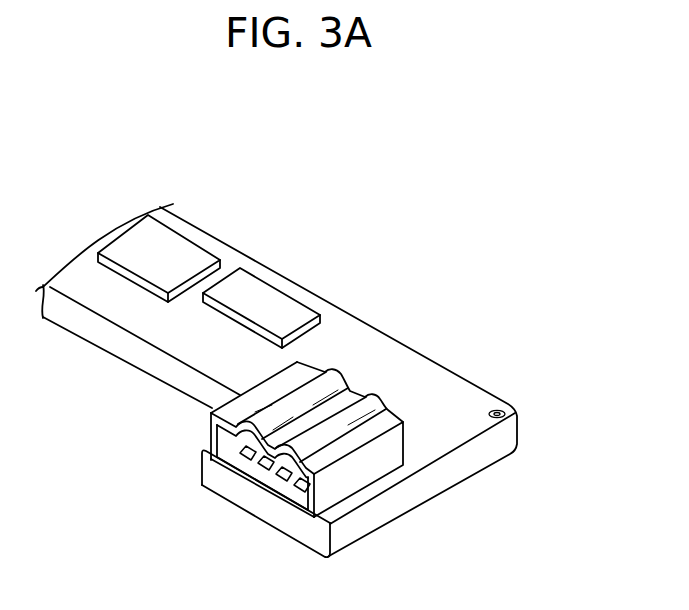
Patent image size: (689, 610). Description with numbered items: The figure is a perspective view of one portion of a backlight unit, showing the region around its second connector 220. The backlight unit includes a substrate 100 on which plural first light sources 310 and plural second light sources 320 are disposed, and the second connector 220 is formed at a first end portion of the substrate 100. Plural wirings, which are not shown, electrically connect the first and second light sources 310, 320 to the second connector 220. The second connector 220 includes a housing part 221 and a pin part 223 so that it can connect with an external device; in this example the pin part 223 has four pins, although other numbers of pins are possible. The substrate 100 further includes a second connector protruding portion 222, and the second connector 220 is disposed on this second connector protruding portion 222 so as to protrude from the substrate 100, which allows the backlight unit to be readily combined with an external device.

The substrate 100 is at (483, 400).
The first light source 310 is at (268, 303).
The second light source 320 is at (178, 245).
The second connector 220 is at (421, 466).
The housing part 221 is at (323, 458).
The second connector protruding portion 222 is at (351, 506).
The pin part 223 is at (307, 487).